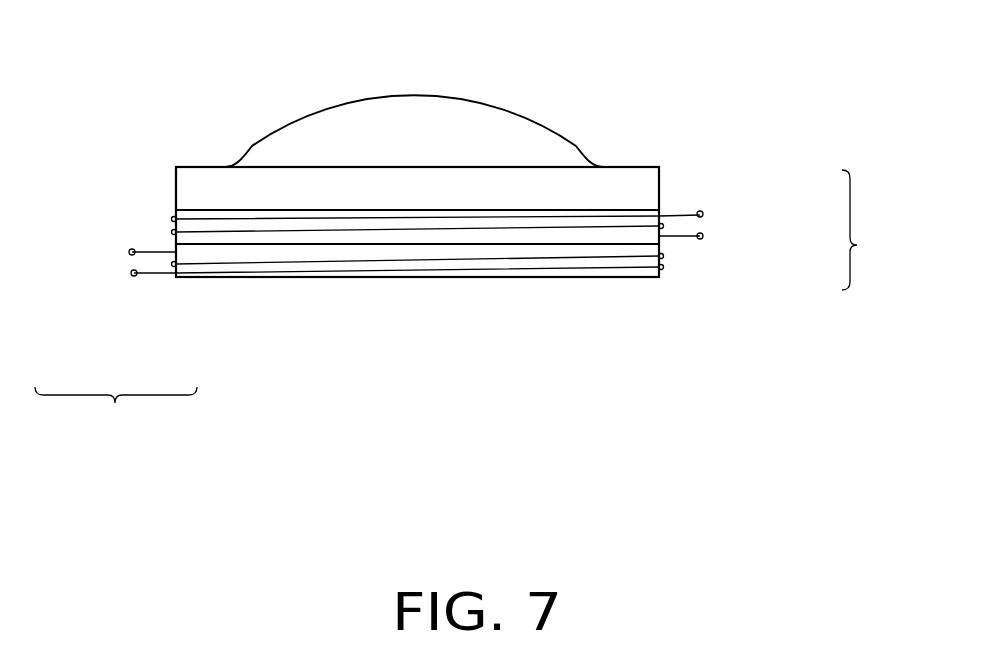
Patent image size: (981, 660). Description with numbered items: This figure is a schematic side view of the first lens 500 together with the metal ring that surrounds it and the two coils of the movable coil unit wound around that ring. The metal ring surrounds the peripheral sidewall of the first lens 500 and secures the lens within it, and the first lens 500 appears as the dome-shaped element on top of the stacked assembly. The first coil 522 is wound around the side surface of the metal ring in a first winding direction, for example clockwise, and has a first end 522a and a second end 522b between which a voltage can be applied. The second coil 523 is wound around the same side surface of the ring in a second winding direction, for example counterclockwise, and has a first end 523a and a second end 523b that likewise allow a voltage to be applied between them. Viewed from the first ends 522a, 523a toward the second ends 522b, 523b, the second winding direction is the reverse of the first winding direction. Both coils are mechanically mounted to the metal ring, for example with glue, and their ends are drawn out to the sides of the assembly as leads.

The first lens 500 is at (458, 142).
The first coil 522 is at (881, 230).
The first end 522a is at (700, 211).
The second end 522b is at (700, 239).
The second coil 523 is at (116, 418).
The first end 523a is at (135, 276).
The second end 523b is at (129, 253).